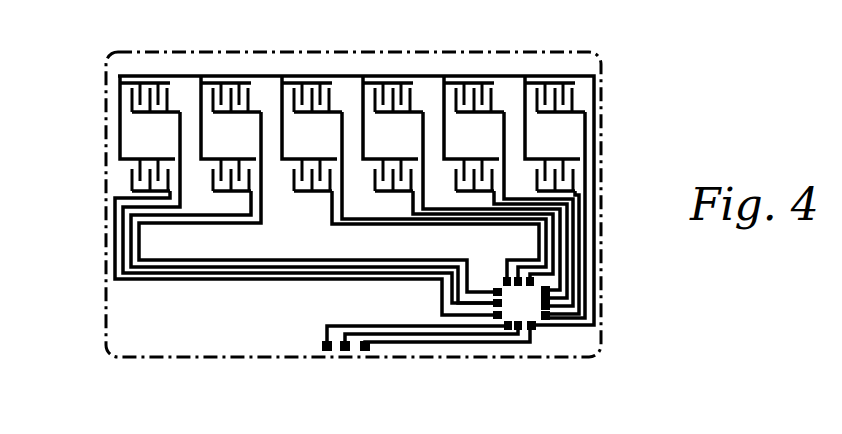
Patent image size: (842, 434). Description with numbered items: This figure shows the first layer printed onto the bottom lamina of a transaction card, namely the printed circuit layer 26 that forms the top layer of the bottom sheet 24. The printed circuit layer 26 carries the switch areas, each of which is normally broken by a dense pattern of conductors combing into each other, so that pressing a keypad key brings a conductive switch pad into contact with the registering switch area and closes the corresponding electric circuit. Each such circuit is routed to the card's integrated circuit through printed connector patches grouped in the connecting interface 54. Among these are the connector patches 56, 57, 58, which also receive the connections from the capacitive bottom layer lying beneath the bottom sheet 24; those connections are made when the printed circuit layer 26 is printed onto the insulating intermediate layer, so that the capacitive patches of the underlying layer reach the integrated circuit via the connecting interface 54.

The bottom sheet 24 is at (105, 129).
The printed circuit layer 26 is at (354, 200).
The connecting interface 54 is at (546, 340).
The connector patch 56 is at (325, 352).
The terminal pad 57 is at (345, 352).
The connector patch 58 is at (366, 352).